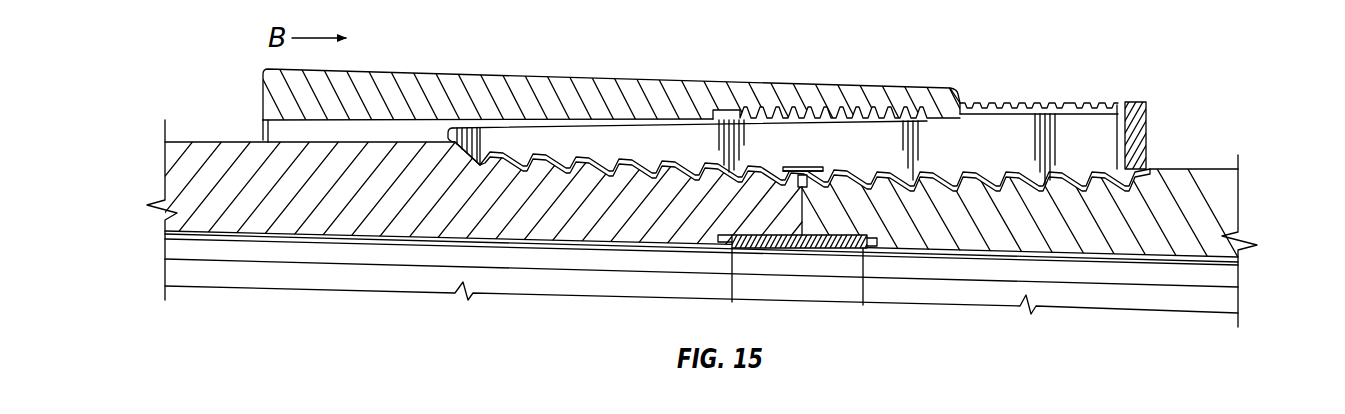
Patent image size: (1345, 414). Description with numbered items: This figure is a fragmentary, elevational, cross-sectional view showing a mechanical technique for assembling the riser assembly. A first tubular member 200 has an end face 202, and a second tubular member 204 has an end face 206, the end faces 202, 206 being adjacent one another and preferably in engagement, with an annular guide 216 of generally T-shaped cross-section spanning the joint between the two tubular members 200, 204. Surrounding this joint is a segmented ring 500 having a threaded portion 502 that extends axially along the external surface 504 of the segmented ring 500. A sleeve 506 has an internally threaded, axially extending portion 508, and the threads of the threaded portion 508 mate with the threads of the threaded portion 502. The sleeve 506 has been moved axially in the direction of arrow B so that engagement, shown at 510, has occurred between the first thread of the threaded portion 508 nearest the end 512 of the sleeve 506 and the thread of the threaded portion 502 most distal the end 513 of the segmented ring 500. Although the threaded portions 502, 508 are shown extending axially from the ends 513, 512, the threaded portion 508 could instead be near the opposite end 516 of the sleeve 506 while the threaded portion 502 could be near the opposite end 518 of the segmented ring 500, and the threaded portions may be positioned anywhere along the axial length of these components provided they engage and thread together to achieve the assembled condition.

The first tubular member 200 is at (195, 176).
The end face 202 is at (822, 209).
The second tubular member 204 is at (1208, 202).
The end face 206 is at (780, 207).
The annular guide 216 is at (818, 262).
The segmented ring 500 is at (1100, 91).
The threaded portion 502 is at (1058, 110).
The external surface 504 is at (569, 128).
The sleeve 506 is at (467, 70).
The threaded portion 508 is at (788, 104).
The engagement 510 is at (935, 106).
The end 512 is at (958, 101).
The end 513 is at (1148, 128).
The end 516 is at (262, 82).
The end 518 is at (450, 140).